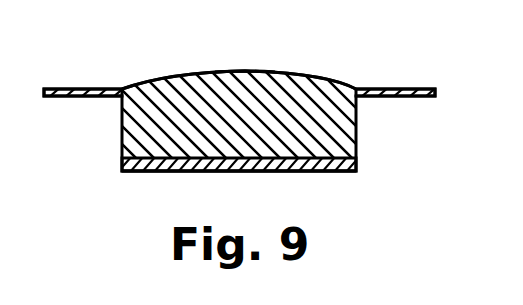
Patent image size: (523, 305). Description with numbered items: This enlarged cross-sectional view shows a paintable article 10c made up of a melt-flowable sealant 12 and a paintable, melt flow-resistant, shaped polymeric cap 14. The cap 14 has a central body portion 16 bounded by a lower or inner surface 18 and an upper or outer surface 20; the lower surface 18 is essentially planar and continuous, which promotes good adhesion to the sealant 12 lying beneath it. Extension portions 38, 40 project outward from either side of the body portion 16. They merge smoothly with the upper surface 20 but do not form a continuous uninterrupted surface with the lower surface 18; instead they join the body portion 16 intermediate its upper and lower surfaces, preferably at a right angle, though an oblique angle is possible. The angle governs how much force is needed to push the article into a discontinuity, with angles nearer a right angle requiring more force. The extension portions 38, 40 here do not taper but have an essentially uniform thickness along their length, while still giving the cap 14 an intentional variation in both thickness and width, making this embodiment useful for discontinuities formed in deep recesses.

The paintable article 10c is at (168, 73).
The sealant 12 is at (327, 163).
The cap 14 is at (262, 73).
The central body portion 16 is at (345, 118).
The lower surface 18 is at (146, 165).
The upper surface 20 is at (304, 73).
The extension portion 38 is at (401, 90).
The extension portion 40 is at (67, 97).